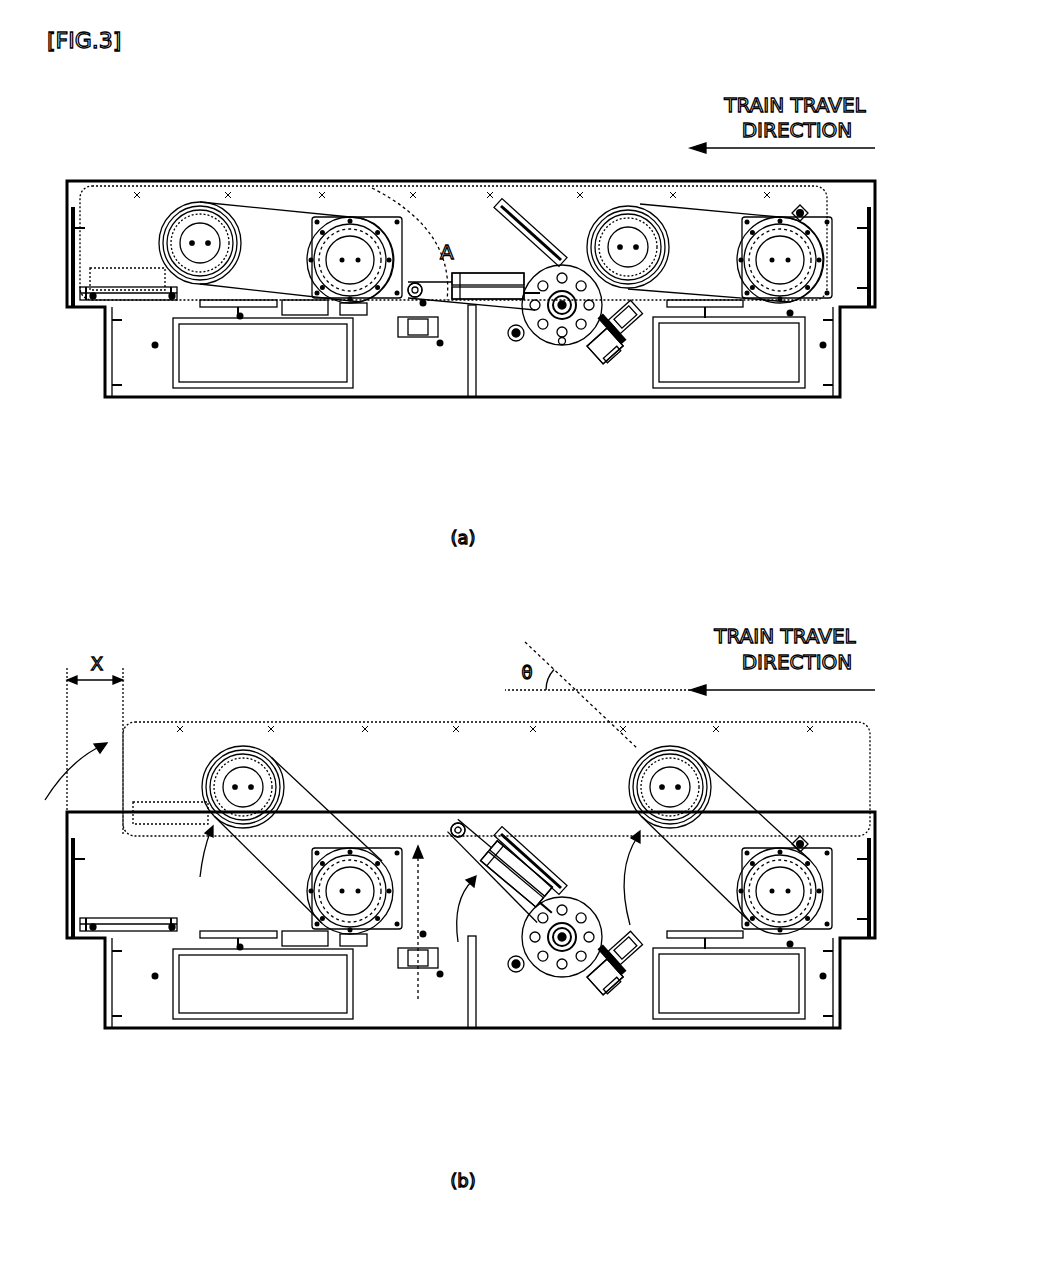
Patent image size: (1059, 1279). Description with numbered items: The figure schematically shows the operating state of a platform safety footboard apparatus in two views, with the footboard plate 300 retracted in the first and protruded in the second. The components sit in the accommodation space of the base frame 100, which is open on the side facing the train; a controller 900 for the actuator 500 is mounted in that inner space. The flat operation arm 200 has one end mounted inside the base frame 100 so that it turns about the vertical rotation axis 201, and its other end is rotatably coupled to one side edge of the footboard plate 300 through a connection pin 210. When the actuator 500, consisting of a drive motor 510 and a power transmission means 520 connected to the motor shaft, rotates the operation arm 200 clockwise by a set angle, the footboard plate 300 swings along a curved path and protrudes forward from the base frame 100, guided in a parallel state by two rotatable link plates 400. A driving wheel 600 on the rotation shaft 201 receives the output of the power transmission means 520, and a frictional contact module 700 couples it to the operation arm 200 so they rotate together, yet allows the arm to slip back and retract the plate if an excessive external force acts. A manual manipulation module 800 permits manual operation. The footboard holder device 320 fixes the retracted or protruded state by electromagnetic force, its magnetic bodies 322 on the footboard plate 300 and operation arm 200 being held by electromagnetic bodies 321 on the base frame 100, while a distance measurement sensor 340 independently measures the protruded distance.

The base frame 100 is at (805, 398).
The operation arm 200 is at (490, 315).
The rotation axis 201 is at (560, 348).
The connection pin 210 is at (410, 300).
The footboard plate 300 is at (82, 190).
The footboard holder device 320 is at (415, 104).
The electromagnetic body 321 is at (505, 205).
The magnetic body 322 is at (147, 280).
The distance measurement sensor 340 is at (420, 338).
The rotatable link plate 400 is at (258, 205).
The actuator 500 is at (600, 482).
The drive motor 510 is at (635, 335).
The power transmission means 520 is at (605, 345).
The driving wheel 600 is at (572, 268).
The frictional contact module 700 is at (560, 265).
The manual manipulation module 800 is at (517, 342).
The controller 900 is at (745, 388).